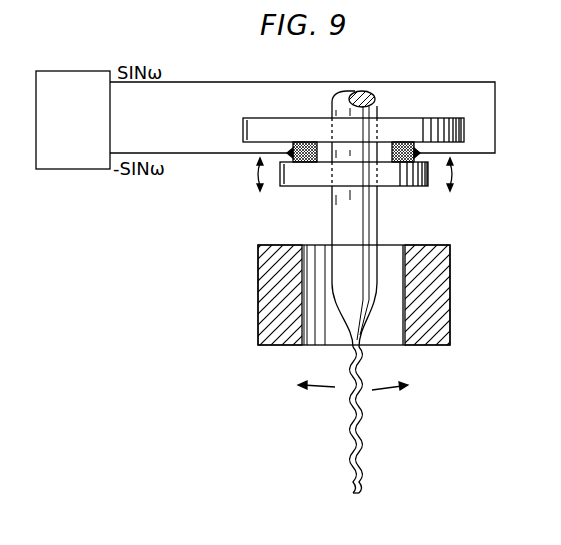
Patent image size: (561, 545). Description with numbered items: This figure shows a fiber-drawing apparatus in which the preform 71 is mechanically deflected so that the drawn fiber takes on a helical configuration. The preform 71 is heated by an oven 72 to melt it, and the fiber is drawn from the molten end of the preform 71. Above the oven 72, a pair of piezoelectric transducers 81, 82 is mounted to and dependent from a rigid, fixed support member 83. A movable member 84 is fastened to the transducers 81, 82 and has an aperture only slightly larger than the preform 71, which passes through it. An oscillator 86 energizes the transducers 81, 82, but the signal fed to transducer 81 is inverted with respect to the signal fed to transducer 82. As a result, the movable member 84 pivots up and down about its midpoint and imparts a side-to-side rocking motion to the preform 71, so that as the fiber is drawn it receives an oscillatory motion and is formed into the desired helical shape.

The preform 71 is at (371, 109).
The oven 72 is at (444, 326).
The piezoelectric transducer 81 is at (300, 163).
The piezoelectric transducer 82 is at (403, 175).
The rigid, fixed support member 83 is at (250, 121).
The movable member 84 is at (286, 182).
The oscillator 86 is at (92, 166).